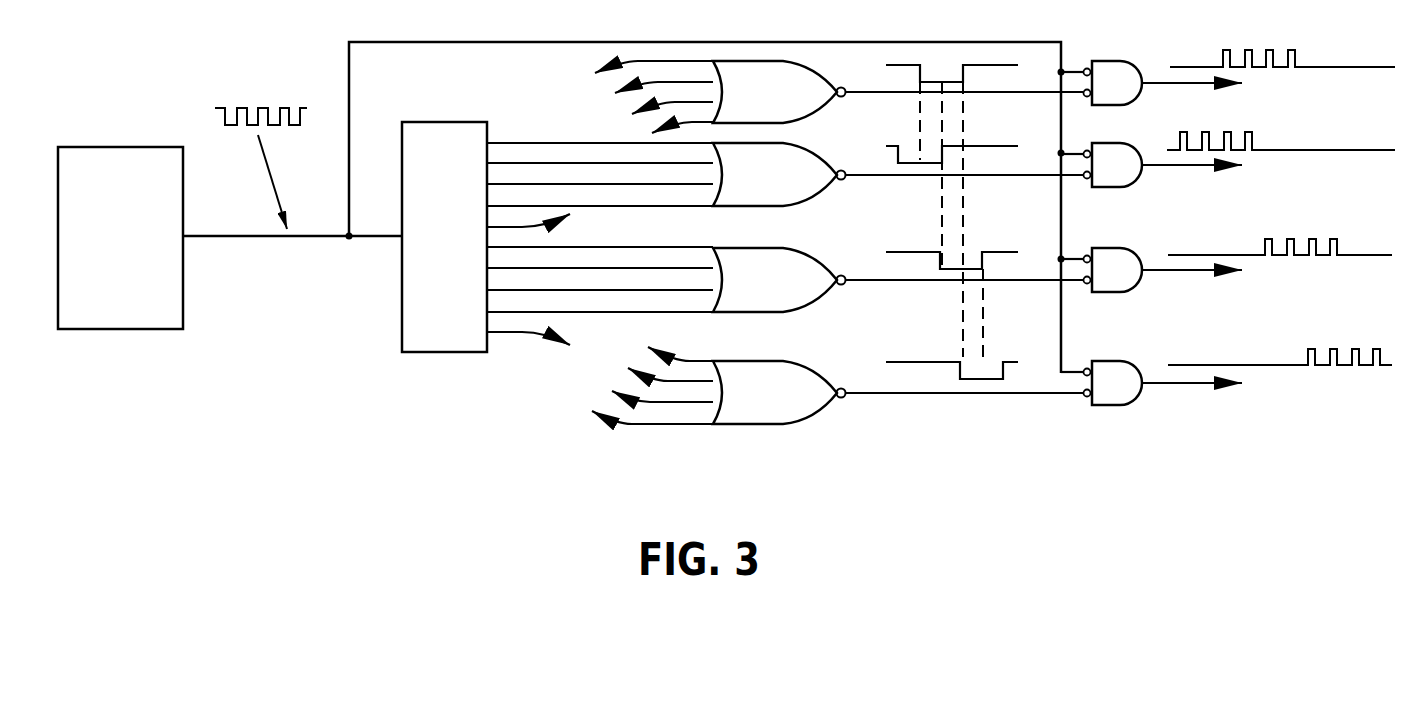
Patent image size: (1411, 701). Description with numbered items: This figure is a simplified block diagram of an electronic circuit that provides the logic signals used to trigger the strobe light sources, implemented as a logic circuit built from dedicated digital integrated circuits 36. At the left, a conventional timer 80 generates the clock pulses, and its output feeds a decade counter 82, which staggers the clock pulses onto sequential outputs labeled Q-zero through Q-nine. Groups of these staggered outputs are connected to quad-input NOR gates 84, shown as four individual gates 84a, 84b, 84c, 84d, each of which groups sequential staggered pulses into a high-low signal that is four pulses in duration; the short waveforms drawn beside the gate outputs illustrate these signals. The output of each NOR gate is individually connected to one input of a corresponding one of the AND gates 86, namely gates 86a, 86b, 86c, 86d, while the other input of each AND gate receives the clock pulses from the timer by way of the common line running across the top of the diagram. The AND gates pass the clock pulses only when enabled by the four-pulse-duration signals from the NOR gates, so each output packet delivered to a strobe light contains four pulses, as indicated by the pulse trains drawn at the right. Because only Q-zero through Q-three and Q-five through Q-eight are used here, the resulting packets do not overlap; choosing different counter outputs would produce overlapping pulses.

The 555 timer 80 is at (135, 329).
The decade counter 82 is at (437, 352).
The quad-input NOR gates 84 is at (747, 437).
The quad-input NOR gate 84a is at (818, 108).
The quad-input NOR gate 84b is at (818, 190).
The quad-input NOR gate 84c is at (818, 296).
The quad-input NOR gate 84d is at (810, 411).
The dedicated digital integrated circuits 36 is at (938, 441).
The AND gates 86 is at (1113, 421).
The AND gate 86a is at (1140, 97).
The AND gate 86b is at (1140, 180).
The AND gate 86c is at (1140, 285).
The AND gate 86d is at (1140, 398).